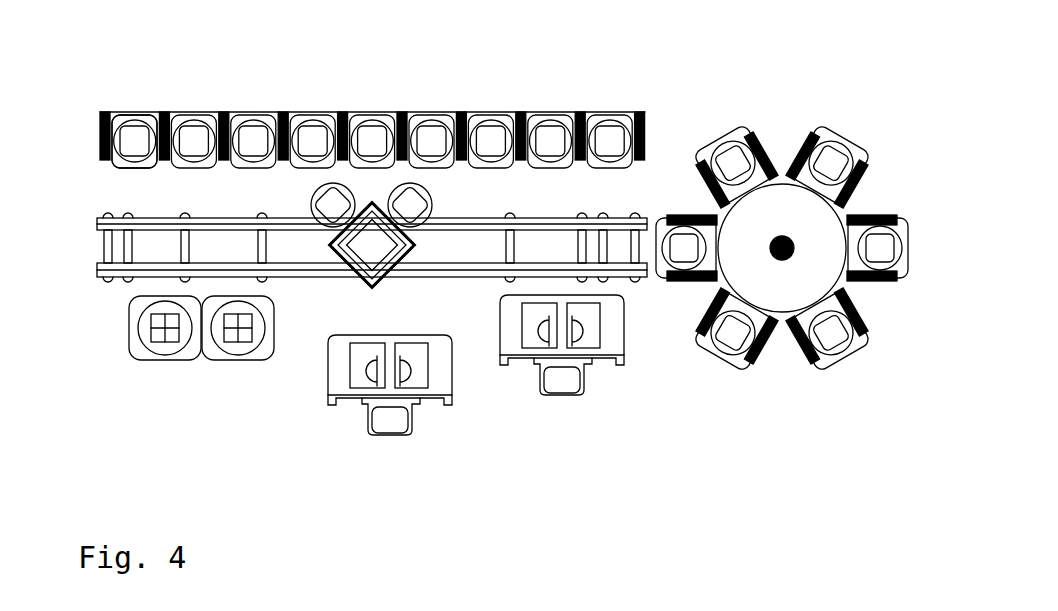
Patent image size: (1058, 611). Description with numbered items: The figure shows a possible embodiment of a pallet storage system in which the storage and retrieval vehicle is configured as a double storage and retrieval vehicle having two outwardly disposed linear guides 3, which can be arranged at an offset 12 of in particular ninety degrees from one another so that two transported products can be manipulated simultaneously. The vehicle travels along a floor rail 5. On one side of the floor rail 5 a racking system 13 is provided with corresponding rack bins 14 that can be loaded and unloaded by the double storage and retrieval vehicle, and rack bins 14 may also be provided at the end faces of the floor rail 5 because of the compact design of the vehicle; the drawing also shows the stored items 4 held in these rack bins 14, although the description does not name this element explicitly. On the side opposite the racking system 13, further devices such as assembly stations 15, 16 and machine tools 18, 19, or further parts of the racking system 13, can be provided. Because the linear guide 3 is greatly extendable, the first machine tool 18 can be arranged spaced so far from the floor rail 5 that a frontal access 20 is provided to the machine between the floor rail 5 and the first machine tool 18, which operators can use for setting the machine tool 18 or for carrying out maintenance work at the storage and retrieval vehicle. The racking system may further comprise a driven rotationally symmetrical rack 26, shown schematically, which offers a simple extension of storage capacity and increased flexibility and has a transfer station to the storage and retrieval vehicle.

The linear guide 3 is at (345, 272).
The containers 4 is at (312, 192).
The floor rail 5 is at (470, 277).
The offset 12 is at (371, 205).
The racking system 13 is at (160, 115).
The rack bin 14 is at (358, 107).
The assembly station 15 is at (130, 342).
The assembly station 16 is at (218, 348).
The first machine tool 18 is at (338, 387).
The machine tool 19 is at (608, 345).
The frontal access 20 is at (404, 282).
The rotationally symmetrical rack 26 is at (760, 220).